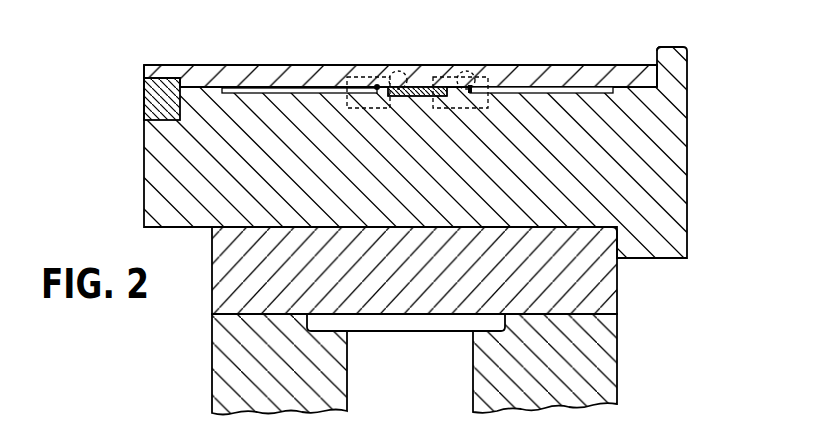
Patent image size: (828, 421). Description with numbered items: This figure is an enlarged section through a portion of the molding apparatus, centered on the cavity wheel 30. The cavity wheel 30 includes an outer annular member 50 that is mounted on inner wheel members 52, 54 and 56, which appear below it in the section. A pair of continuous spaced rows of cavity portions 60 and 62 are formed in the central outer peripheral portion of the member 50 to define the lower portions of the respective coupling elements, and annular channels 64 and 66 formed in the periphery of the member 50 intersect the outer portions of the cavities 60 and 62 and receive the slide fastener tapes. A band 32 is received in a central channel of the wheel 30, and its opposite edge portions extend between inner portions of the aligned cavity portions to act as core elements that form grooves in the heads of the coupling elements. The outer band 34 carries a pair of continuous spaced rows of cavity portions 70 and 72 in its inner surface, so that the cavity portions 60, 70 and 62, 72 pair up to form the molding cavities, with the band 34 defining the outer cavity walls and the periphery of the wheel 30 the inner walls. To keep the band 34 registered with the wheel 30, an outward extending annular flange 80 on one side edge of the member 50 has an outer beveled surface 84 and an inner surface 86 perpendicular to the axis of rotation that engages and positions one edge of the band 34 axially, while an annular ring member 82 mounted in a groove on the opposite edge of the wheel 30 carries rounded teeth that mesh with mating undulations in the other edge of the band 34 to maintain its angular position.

The cavity wheel 30 is at (144, 160).
The band 32 is at (412, 87).
The outer band 34 is at (270, 73).
The outer annular member 50 is at (160, 205).
The inner wheel member 52 is at (212, 258).
The inner wheel member 54 is at (211, 395).
The inner wheel member 56 is at (477, 365).
The cavity portion 60 is at (374, 77).
The cavity portion 62 is at (482, 76).
The annular channel 64 is at (245, 85).
The annular channel 66 is at (540, 86).
The cavity portion 70 is at (392, 72).
The cavity portion 72 is at (467, 72).
The annular flange 80 is at (683, 56).
The annular ring member 82 is at (143, 104).
The outer beveled surface 84 is at (658, 52).
The inner surface 86 is at (655, 73).